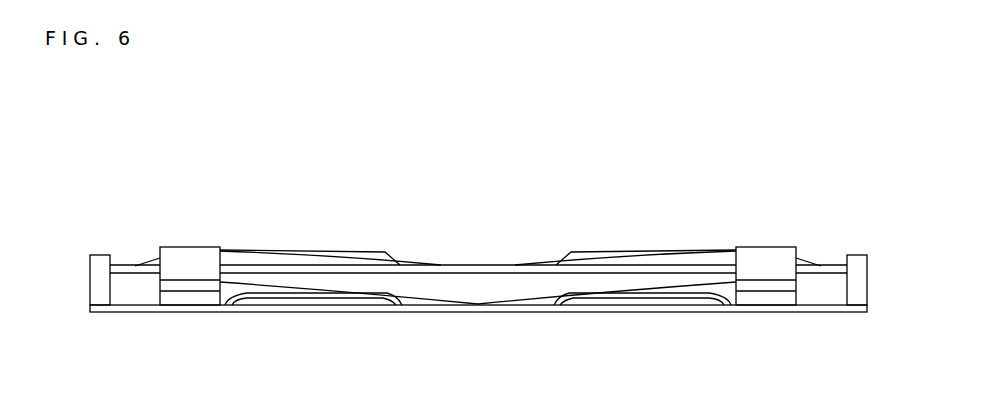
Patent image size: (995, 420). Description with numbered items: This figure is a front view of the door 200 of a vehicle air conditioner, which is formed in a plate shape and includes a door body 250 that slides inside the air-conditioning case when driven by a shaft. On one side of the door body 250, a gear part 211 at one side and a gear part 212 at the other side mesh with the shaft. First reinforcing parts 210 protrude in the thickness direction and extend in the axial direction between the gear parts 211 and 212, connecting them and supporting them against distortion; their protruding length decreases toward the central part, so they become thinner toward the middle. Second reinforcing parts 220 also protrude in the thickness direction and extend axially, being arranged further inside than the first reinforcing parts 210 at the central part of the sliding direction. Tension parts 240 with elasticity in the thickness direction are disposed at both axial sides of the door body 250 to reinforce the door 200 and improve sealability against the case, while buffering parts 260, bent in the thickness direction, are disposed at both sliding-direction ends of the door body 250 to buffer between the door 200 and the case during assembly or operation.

The door 200 is at (697, 191).
The first reinforcing parts 210 is at (521, 298).
The gear part 211 is at (186, 247).
The gear part 212 is at (764, 247).
The second reinforcing parts 220 is at (456, 266).
The tension parts 240 is at (101, 255).
The door body 250 is at (109, 313).
The buffering parts 260 is at (275, 302).